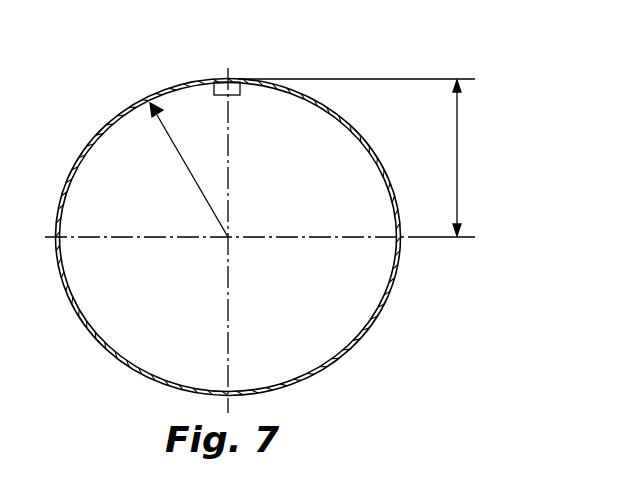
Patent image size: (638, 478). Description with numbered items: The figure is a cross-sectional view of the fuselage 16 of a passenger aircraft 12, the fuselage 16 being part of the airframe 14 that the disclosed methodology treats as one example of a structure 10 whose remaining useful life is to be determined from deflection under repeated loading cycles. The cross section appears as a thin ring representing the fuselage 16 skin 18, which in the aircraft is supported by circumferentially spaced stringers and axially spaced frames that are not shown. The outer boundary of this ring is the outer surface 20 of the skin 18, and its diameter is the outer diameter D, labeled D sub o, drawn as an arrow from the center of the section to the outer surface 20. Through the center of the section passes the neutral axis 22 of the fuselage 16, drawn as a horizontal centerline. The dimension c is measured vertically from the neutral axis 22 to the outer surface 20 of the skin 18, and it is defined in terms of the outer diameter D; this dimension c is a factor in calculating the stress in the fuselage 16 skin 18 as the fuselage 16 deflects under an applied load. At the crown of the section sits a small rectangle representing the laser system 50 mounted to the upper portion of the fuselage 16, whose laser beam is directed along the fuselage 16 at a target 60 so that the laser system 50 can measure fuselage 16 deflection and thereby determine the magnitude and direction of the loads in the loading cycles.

The structure 10 is at (388, 62).
The aircraft 12 is at (392, 55).
The airframe 14 is at (380, 315).
The fuselage 16 is at (75, 313).
The fuselage skin 18 is at (145, 378).
The outer surface 20 is at (252, 78).
The neutral axis 22 is at (343, 236).
The laser system 50 is at (238, 80).
The target 60 is at (206, 80).
The dimension c is at (458, 153).
The outer diameter D is at (177, 153).